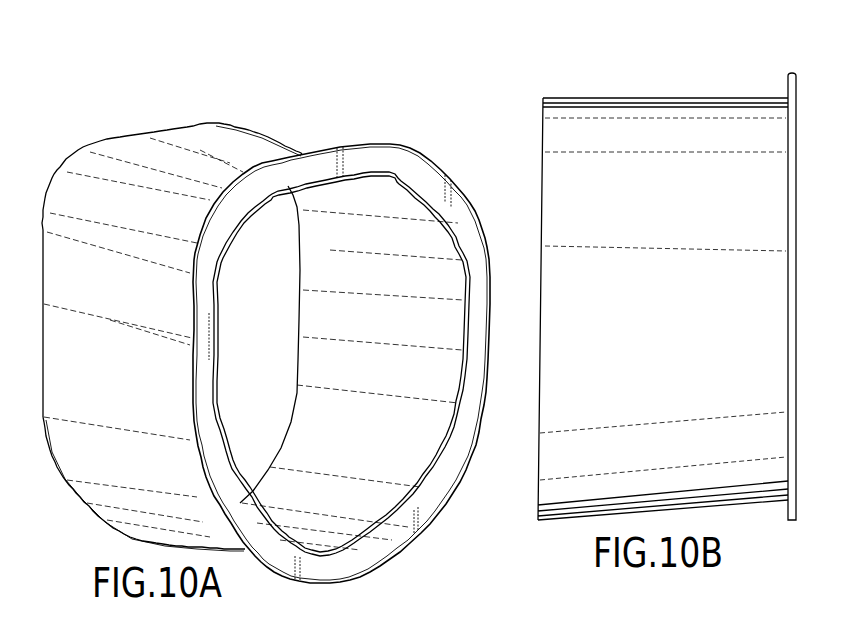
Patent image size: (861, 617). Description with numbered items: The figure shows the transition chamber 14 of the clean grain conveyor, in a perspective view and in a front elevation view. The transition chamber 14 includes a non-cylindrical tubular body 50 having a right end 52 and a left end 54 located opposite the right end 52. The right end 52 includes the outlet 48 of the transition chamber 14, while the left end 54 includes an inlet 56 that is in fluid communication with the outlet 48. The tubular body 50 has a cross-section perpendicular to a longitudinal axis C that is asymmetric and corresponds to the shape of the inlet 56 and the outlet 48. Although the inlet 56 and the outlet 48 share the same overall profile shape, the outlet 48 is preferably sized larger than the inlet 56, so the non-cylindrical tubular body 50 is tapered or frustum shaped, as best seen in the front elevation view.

In FIG. 10A, the transition chamber 14 is at (77, 569).
In FIG. 10B, the transition chamber 14 is at (683, 274).
In FIG. 10A, the outlet 48 is at (508, 505).
In FIG. 10B, the non-cylindrical tubular body 50 is at (663, 276).
In FIG. 10B, the right end 52 is at (543, 57).
In FIG. 10B, the left end 54 is at (786, 277).
In FIG. 10B, the inlet 56 is at (802, 434).
In FIG. 10A, the longitudinal axis C is at (504, 295).